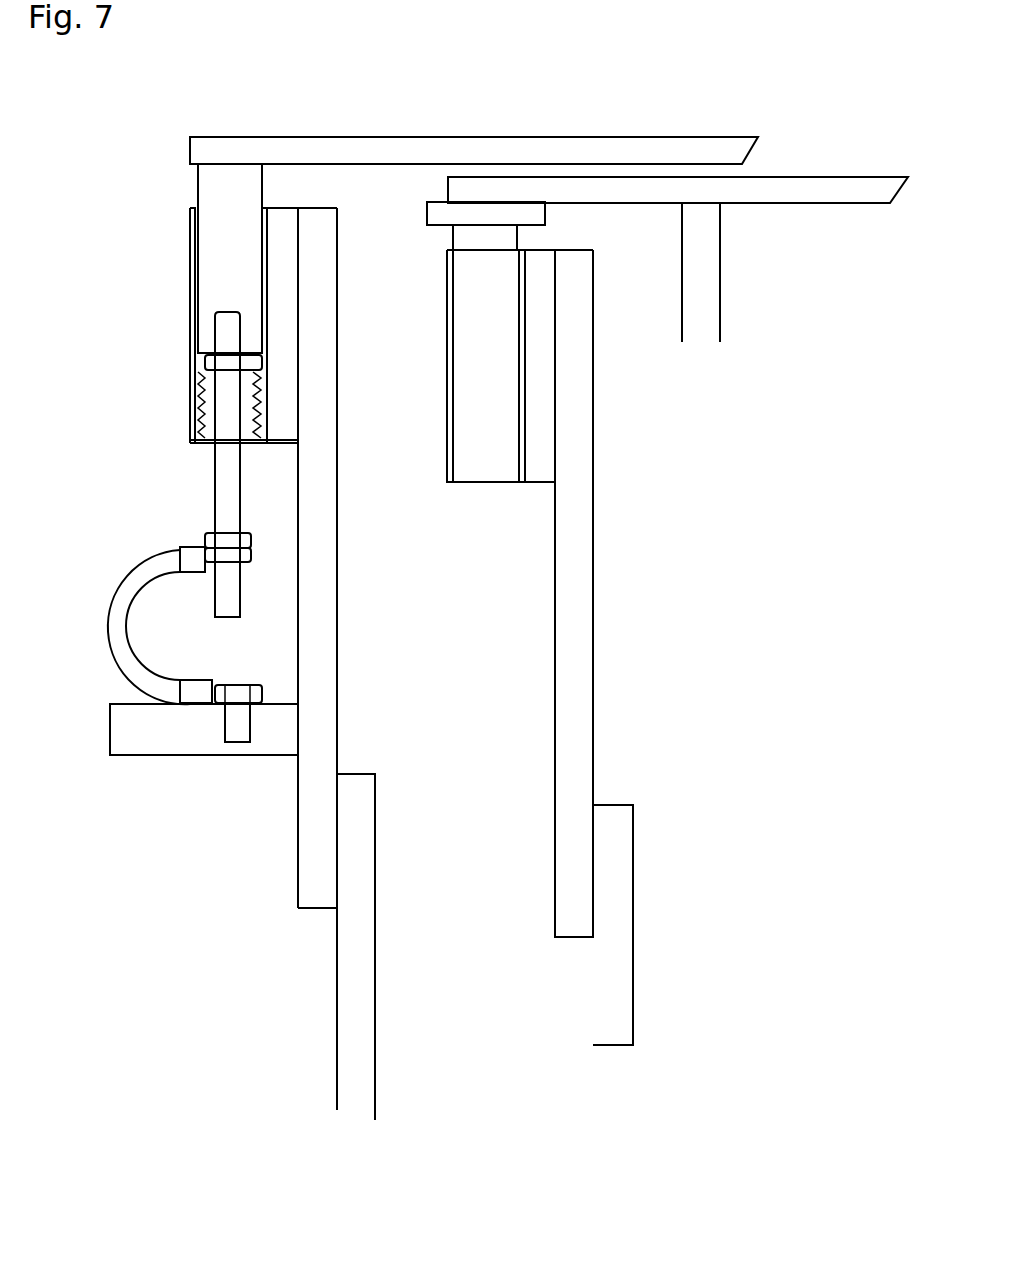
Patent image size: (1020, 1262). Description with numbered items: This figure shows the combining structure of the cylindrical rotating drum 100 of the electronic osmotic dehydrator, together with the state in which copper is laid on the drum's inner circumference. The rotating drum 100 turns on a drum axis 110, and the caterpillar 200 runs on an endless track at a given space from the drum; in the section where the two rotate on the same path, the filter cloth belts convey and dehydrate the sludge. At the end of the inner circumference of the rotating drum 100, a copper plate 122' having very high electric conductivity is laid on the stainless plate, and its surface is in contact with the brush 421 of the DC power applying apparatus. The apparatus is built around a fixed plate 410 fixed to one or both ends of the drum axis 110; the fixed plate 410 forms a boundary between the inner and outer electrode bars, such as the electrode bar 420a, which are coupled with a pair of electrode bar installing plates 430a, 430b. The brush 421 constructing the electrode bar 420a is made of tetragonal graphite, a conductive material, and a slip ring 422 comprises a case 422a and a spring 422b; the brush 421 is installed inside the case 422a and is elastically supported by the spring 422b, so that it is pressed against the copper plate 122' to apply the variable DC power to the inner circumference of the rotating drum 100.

The rotating drum 100 is at (838, 193).
The drum axis 110 is at (353, 843).
The copper plate 122' is at (482, 167).
The caterpillar 200 is at (698, 150).
The fixed plate 410 is at (575, 538).
The electrode bar 420a is at (482, 370).
The brush 421 is at (205, 181).
The slip ring 422 is at (193, 240).
The case 422a is at (228, 482).
The spring 422b is at (200, 385).
The electrode bar installing plate 430a is at (540, 470).
The electrode bar installing plate 430b is at (287, 425).